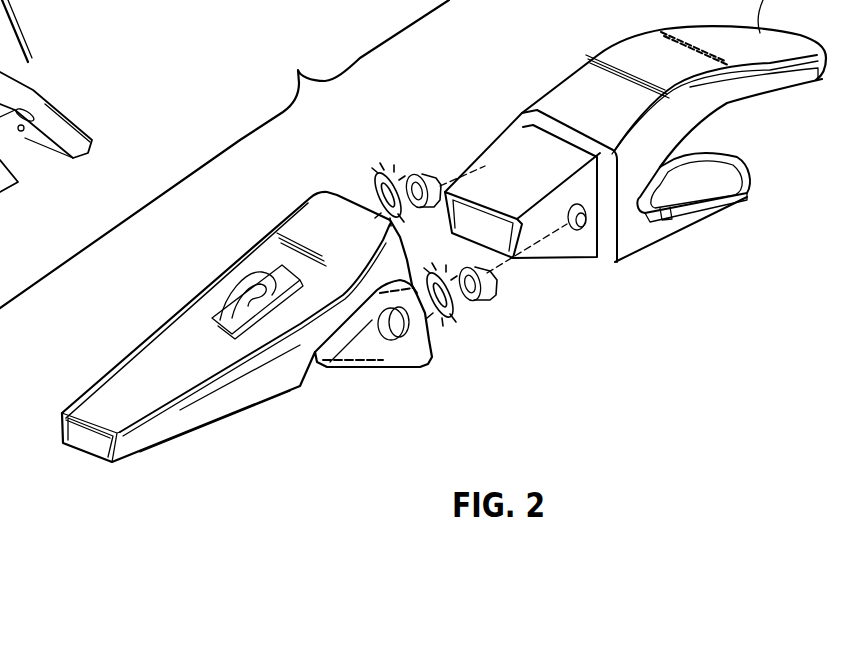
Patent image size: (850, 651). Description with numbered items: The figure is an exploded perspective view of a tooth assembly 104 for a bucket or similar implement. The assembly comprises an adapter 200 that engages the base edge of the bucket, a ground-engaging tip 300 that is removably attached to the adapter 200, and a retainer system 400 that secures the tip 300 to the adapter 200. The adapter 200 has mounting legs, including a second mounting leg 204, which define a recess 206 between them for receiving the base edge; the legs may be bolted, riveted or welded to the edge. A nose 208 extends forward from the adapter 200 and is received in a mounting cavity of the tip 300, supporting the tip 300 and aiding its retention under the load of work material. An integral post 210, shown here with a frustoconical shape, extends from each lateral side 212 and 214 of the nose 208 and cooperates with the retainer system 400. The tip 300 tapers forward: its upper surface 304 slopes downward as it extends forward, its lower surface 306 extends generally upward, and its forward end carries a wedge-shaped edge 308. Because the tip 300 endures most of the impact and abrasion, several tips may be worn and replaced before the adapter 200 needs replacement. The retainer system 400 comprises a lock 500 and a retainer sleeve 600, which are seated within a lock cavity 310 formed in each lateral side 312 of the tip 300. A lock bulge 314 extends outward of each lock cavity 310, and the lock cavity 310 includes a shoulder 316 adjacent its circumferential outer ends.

The tooth assembly 104 is at (45, 75).
The adapter 200 is at (608, 10).
The second mounting leg 204 is at (733, 190).
The recess 206 is at (748, 132).
The nose 208 is at (515, 152).
The post 210 is at (584, 216).
The lateral side 212 is at (558, 250).
The lateral side 214 is at (493, 168).
The ground-engaging tip 300 is at (238, 275).
The upper surface 304 is at (160, 352).
The lower surface 306 is at (218, 428).
The wedge-shaped edge 308 is at (73, 420).
The lock cavity 310 is at (388, 338).
The lateral side 312 is at (260, 388).
The lock bulge 314 is at (360, 352).
The shoulder 316 is at (395, 330).
The retainer system 400 is at (439, 247).
The lock 500 is at (412, 172).
The retainer sleeve 600 is at (375, 173).